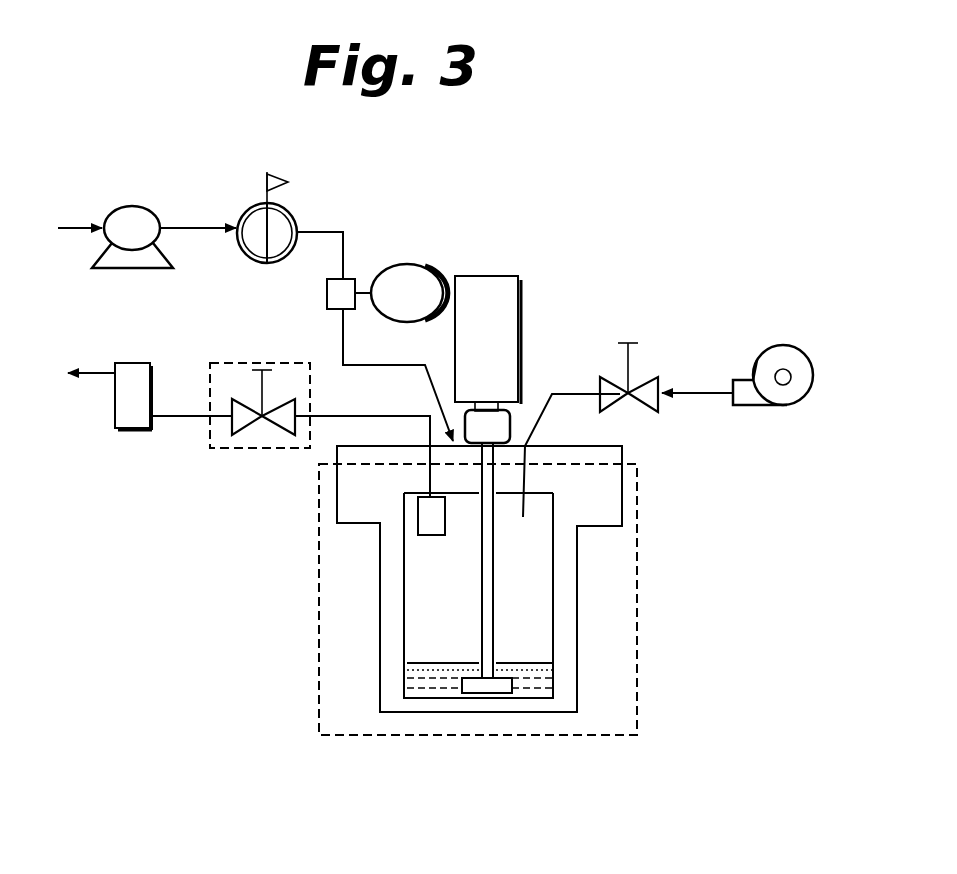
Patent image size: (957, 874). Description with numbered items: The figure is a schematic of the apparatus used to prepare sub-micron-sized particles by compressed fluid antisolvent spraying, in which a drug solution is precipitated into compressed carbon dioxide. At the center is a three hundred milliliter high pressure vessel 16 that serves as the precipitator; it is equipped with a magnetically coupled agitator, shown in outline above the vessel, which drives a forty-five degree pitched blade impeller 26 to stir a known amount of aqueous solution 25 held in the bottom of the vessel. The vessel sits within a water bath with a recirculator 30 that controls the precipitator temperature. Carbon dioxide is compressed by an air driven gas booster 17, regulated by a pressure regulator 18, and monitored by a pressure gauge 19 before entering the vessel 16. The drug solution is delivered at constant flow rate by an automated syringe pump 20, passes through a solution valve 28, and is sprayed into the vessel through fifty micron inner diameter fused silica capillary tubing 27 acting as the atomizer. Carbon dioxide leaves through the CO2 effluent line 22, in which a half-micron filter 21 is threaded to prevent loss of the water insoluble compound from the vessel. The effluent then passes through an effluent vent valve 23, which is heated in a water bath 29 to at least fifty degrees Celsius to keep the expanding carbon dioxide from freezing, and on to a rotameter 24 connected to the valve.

The high pressure vessel 16 is at (479, 579).
The air driven gas booster 17 is at (132, 237).
The pressure regulator 18 is at (242, 216).
The pressure gauge 19 is at (401, 293).
The automated syringe pump 20 is at (812, 362).
The filter 21 is at (428, 535).
The CO2 effluent line 22 is at (327, 417).
The effluent vent valve 23 is at (272, 402).
The rotameter 24 is at (150, 396).
The aqueous solution 25 is at (547, 677).
The pitched blade impeller 26 is at (487, 688).
The fused silica capillary tubing 27 is at (519, 518).
The solution valve 28 is at (647, 388).
The water bath 29 is at (255, 422).
The water bath with a recirculator 30 is at (478, 599).